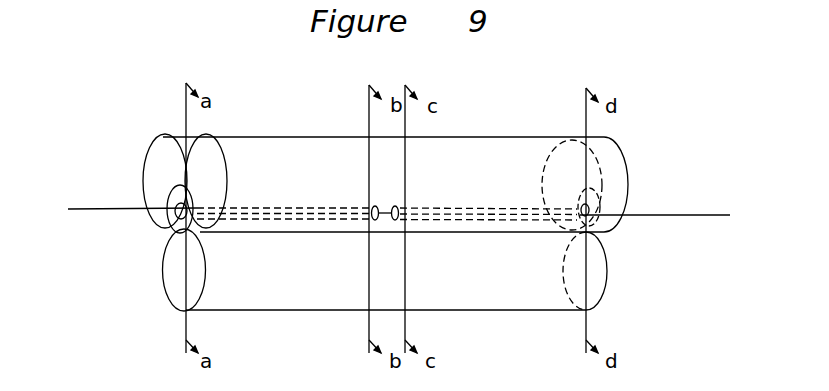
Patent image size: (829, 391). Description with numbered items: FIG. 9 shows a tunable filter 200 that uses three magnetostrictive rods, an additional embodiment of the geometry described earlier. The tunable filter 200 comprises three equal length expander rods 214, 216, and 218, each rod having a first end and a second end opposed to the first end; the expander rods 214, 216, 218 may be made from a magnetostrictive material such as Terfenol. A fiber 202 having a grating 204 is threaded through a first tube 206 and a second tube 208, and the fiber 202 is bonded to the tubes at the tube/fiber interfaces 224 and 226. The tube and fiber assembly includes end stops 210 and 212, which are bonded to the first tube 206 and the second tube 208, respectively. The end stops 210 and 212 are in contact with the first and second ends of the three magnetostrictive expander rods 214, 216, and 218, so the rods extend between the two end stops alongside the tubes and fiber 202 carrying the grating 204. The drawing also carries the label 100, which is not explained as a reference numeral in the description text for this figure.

The optical fiber 100 is at (79, 170).
The tunable filter 200 is at (160, 35).
The fiber 202 is at (92, 215).
The grating 204 is at (387, 205).
The first tube 206 is at (248, 222).
The second tube 208 is at (427, 222).
The end stop 210 is at (168, 188).
The end stop 212 is at (600, 193).
The expander rod 214 is at (160, 133).
The expander rod 216 is at (226, 160).
The expander rod 218 is at (160, 285).
The tube/fiber interface 224 is at (372, 207).
The tube/fiber interface 226 is at (397, 207).